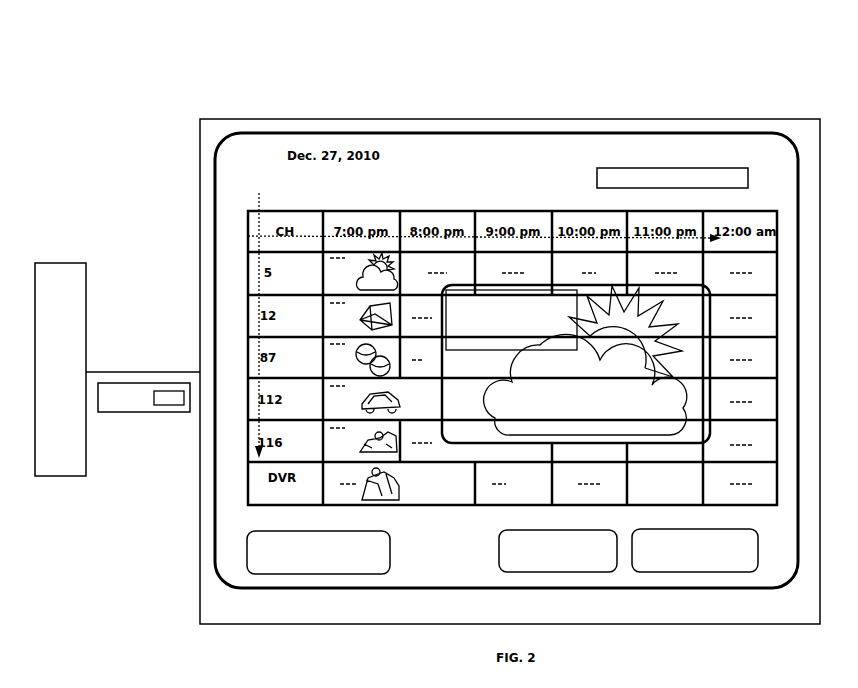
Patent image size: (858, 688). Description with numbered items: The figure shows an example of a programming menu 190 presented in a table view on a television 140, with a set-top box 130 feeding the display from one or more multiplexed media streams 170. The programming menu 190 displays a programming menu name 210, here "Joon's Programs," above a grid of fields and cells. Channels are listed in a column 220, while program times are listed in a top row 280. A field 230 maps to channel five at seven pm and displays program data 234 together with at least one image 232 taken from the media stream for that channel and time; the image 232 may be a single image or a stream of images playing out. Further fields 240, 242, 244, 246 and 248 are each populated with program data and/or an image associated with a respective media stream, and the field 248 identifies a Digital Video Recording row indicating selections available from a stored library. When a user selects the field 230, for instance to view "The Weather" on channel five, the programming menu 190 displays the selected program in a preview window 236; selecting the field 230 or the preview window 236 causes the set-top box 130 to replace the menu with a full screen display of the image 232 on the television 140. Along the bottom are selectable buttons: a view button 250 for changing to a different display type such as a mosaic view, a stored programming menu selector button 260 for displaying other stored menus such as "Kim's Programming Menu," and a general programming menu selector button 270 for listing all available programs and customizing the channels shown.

The programming menu 190 is at (472, 72).
The set-top box 130 is at (117, 369).
The multiplexed media streams 170 is at (144, 397).
The television 140 is at (506, 374).
The programming menu name 210 is at (697, 170).
The column 220 is at (264, 317).
The top row 280 is at (248, 236).
The field 230 is at (338, 273).
The image 232 is at (522, 344).
The program data 234 is at (178, 269).
The preview window 236 is at (576, 364).
The field 240 is at (359, 318).
The field 242 is at (358, 360).
The field 244 is at (363, 404).
The field 246 is at (361, 445).
The field 248 is at (332, 484).
The view button 250 is at (318, 574).
The stored programming menu selector button 260 is at (537, 572).
The general programming menu selector button 270 is at (660, 572).